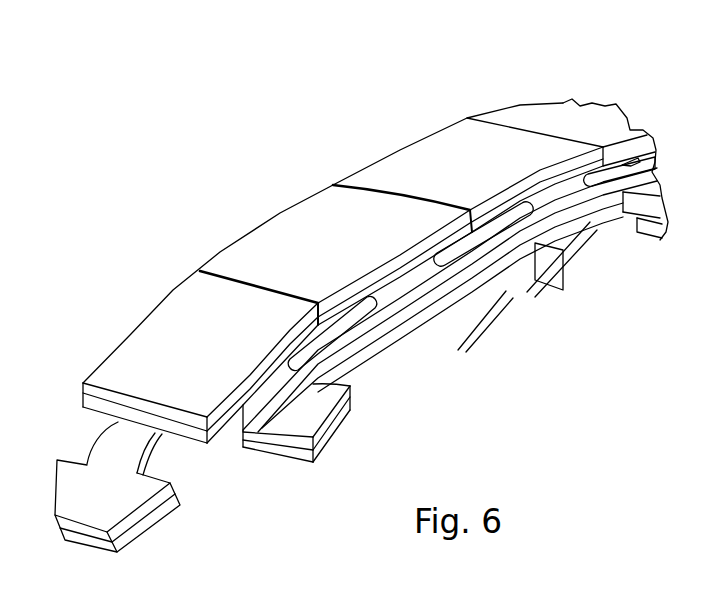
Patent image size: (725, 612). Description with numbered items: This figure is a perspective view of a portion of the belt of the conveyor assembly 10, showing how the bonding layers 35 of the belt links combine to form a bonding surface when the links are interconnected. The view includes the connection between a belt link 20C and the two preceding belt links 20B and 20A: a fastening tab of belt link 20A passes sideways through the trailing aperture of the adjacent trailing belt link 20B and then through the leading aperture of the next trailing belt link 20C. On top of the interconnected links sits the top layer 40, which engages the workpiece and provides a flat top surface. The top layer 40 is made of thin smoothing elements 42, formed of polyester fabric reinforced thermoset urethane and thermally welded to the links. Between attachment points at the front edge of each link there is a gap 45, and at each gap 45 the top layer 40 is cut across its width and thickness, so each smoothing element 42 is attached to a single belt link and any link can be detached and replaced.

The conveyor assembly 10 is at (435, 119).
The top layer 40 is at (373, 160).
The smoothing elements 42 is at (219, 359).
The belt link 20A is at (657, 173).
The belt link 20B is at (432, 292).
The belt link 20C is at (352, 407).
The gap 45 is at (336, 341).
The bonding layers 35 is at (258, 408).